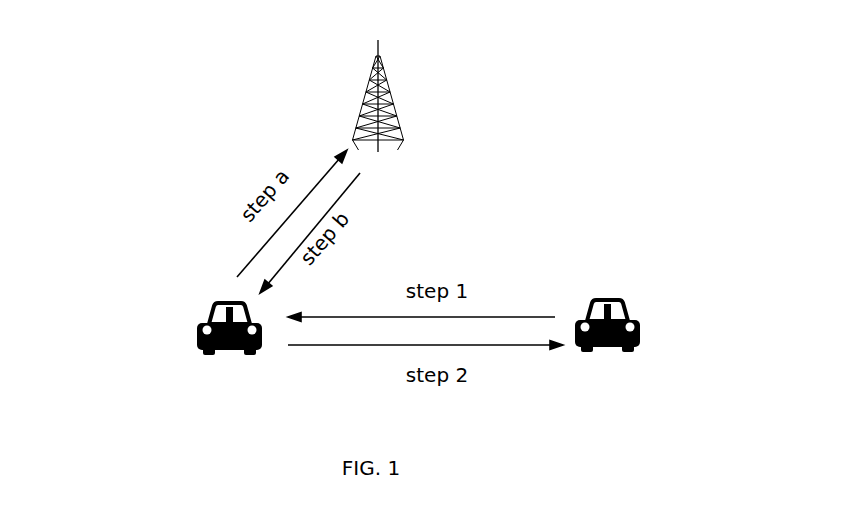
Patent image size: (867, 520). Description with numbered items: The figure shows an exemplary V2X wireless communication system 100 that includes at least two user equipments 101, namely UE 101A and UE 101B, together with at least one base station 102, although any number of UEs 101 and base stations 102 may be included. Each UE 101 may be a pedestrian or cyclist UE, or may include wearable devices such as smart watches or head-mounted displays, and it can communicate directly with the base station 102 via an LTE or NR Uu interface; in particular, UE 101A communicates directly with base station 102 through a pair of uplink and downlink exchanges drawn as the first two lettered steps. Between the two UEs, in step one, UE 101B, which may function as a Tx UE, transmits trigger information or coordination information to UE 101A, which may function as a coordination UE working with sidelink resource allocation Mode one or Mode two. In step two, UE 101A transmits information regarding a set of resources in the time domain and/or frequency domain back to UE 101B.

The wireless communication system 100 is at (642, 114).
The user equipment 101 is at (178, 302).
The UE 101A is at (185, 298).
The UE 101B is at (652, 322).
The base station 102 is at (340, 106).